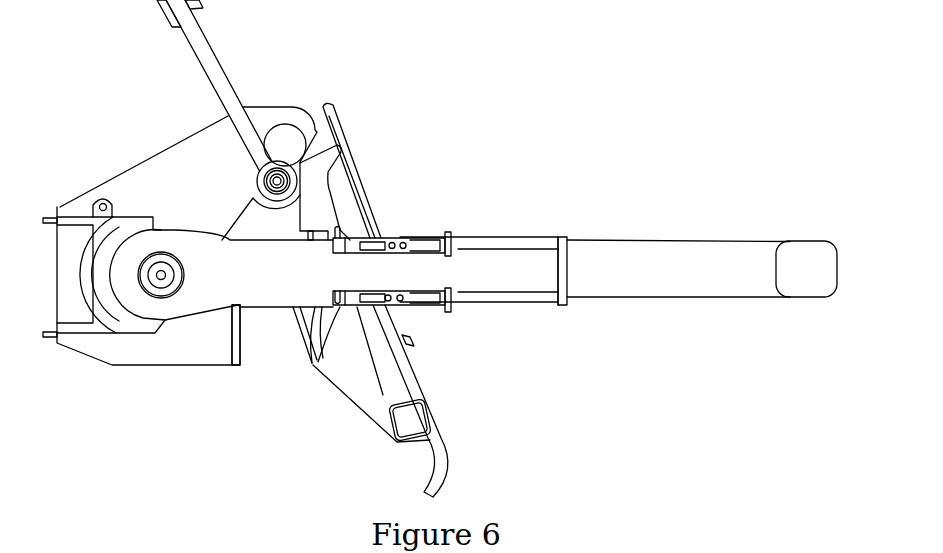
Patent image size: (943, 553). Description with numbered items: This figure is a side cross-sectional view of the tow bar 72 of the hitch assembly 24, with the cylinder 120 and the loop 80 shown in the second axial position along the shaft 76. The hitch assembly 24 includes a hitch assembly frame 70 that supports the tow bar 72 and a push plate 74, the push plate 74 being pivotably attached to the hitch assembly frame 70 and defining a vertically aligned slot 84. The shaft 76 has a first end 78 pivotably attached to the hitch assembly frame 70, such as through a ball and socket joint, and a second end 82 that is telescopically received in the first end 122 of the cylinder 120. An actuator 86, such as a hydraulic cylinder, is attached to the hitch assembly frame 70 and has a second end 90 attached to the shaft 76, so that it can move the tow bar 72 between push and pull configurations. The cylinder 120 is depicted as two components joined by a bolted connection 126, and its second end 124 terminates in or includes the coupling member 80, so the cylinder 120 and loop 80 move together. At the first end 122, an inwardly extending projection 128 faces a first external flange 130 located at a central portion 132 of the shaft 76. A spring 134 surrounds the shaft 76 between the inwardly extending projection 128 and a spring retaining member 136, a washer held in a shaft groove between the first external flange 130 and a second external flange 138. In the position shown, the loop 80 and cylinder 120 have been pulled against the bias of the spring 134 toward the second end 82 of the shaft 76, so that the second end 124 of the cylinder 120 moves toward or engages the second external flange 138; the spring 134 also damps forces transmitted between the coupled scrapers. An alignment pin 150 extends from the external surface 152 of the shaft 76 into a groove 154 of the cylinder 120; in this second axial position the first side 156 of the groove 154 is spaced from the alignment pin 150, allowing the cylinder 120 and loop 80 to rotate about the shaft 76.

The hitch assembly 24 is at (437, 52).
The hitch assembly frame 70 is at (147, 358).
The tow bar 72 is at (487, 190).
The push plate 74 is at (441, 412).
The shaft 76 is at (202, 296).
The first end 78 is at (248, 333).
The coupling member 80 is at (737, 251).
The second end 82 is at (517, 317).
The slot 84 is at (393, 222).
The actuator 86 is at (213, 69).
The second end 90 is at (249, 168).
The cylinder 120 is at (454, 314).
The first end 122 is at (378, 307).
The second end 124 is at (556, 317).
The bolted connection 126 is at (443, 232).
The inwardly extending projection 128 is at (427, 378).
The first external flange 130 is at (349, 322).
The central portion 132 is at (347, 211).
The spring 134 is at (398, 306).
The spring retaining member 136 is at (417, 298).
The second external flange 138 is at (567, 274).
The alignment pin 150 is at (314, 368).
The external surface 152 is at (312, 362).
The groove 154 is at (353, 229).
The first side 156 is at (310, 236).